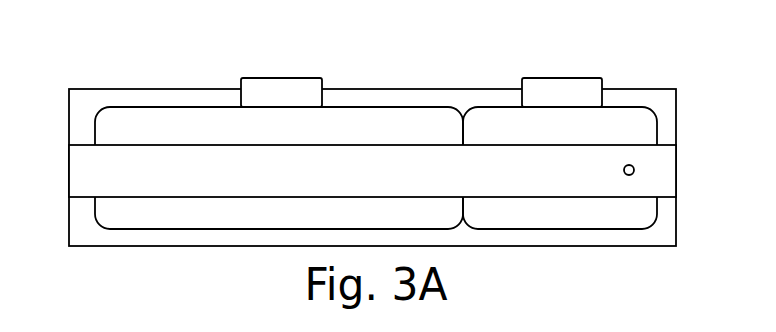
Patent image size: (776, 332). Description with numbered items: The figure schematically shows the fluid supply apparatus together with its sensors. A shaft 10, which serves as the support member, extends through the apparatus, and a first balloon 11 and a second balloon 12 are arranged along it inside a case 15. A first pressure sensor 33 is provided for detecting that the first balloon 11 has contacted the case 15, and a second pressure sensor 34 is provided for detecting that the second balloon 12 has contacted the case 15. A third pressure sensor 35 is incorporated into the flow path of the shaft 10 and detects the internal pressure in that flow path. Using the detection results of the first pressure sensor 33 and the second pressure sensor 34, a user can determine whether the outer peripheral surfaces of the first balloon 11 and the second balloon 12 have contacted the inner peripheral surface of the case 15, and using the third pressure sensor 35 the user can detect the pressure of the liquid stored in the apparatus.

The shaft 10 is at (405, 168).
The first balloon 11 is at (127, 118).
The second balloon 12 is at (630, 118).
The case 15 is at (467, 88).
The first pressure sensor 33 is at (270, 78).
The second pressure sensor 34 is at (555, 78).
The third pressure sensor 35 is at (634, 165).